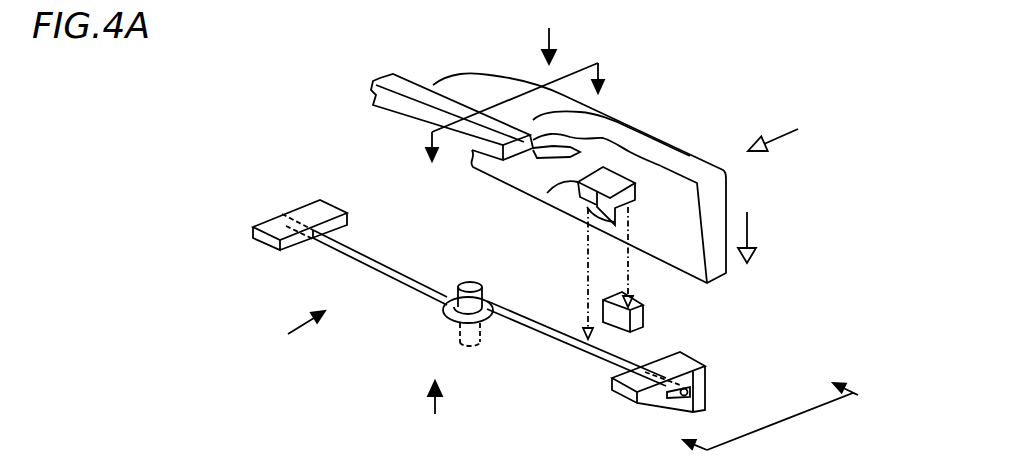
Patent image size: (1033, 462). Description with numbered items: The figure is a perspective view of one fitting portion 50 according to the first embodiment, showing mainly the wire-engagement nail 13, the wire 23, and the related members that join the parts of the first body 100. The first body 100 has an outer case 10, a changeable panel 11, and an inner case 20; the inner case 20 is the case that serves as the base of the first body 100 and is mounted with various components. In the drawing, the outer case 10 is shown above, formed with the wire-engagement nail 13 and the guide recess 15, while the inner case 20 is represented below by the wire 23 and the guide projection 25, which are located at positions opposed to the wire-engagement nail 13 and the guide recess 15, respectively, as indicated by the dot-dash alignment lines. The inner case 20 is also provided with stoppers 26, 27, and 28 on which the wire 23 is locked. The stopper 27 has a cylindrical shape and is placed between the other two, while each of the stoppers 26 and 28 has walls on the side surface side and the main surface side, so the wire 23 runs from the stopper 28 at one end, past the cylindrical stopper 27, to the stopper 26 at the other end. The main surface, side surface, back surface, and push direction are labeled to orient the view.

The first body 100 is at (145, 60).
The fitting portion 50 is at (311, 86).
The outer case 10 is at (649, 137).
The changeable panel 11 is at (605, 115).
The wire-engagement nail 13 is at (547, 193).
The guide recess 15 is at (627, 207).
The inner case 20 is at (343, 170).
The wire 23 is at (563, 338).
The guide projection 25 is at (640, 315).
The stopper 26 is at (620, 395).
The stopper 27 is at (460, 339).
The stopper 28 is at (273, 250).